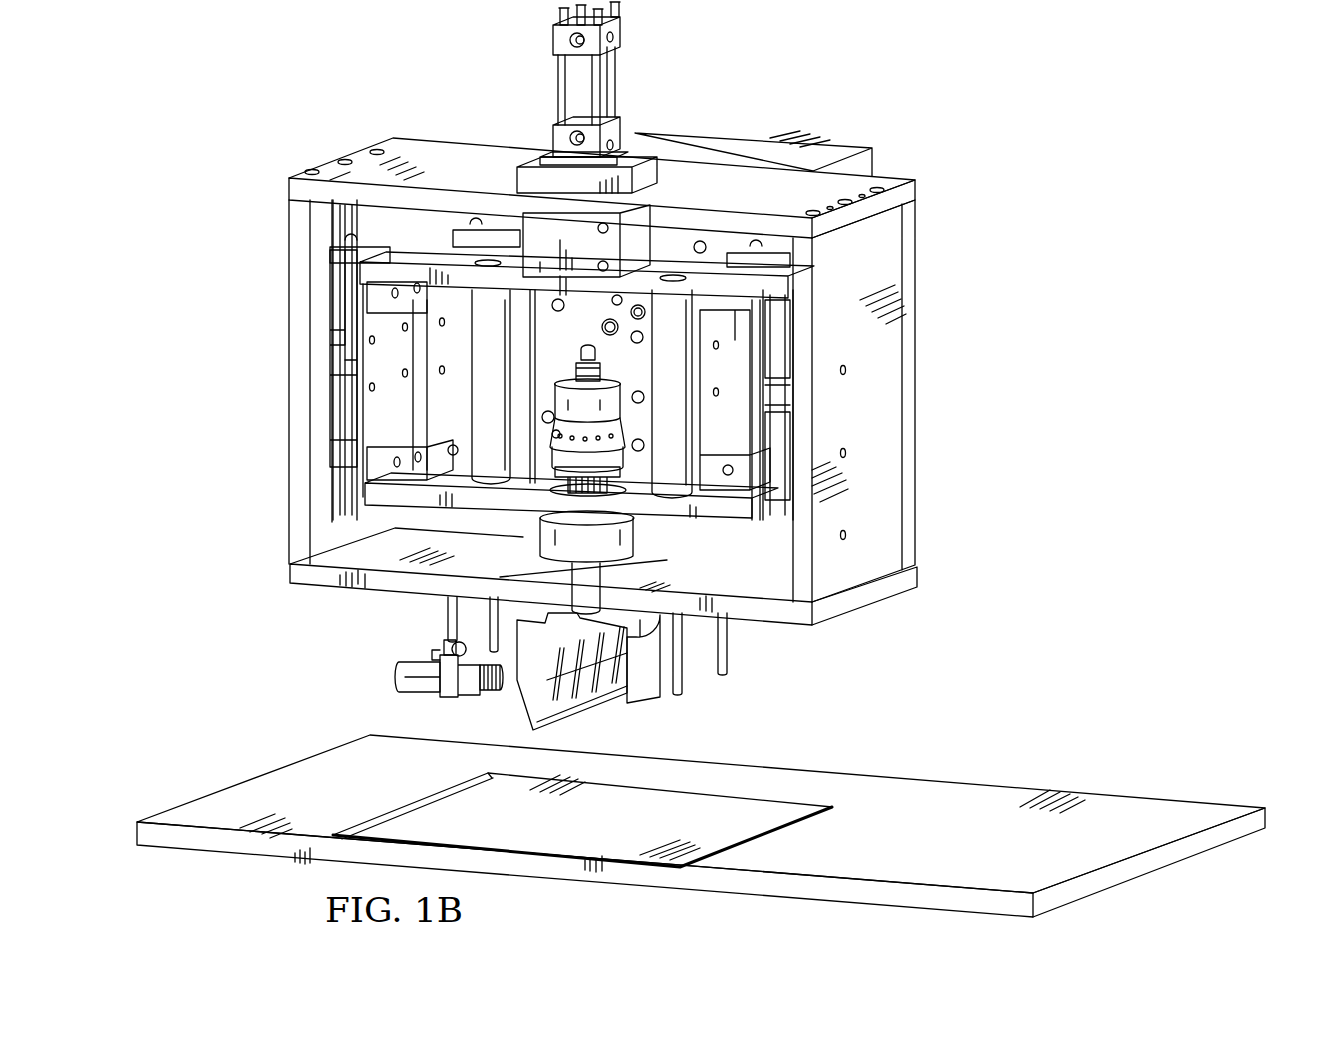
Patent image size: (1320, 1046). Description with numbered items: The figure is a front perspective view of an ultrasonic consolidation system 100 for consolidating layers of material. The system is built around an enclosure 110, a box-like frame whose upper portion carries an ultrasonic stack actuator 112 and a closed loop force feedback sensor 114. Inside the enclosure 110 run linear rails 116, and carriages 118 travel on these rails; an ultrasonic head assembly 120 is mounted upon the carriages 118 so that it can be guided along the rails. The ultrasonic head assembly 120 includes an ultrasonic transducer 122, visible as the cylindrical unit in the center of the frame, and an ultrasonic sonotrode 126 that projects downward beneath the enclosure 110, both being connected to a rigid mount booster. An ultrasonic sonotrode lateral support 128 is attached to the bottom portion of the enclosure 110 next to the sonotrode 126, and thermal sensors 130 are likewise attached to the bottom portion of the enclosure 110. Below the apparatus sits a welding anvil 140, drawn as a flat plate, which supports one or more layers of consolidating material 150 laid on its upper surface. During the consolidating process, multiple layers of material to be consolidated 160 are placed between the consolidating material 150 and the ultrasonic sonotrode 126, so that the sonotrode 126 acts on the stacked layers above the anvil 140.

The ultrasonic consolidation system 100 is at (536, 375).
The enclosure 110 is at (603, 378).
The ultrasonic stack actuator 112 is at (553, 133).
The closed loop force feedback sensor 114 is at (603, 240).
The linear rails 116 is at (335, 477).
The carriages 118 is at (335, 302).
The ultrasonic head assembly 120 is at (718, 258).
The ultrasonic transducer 122 is at (568, 378).
The ultrasonic sonotrode 126 is at (547, 733).
The ultrasonic sonotrode lateral support 128 is at (663, 698).
The thermal sensors 130 is at (418, 665).
The welding anvil 140 is at (200, 858).
The consolidating material 150 is at (403, 797).
The layers of material to be consolidated 160 is at (742, 790).